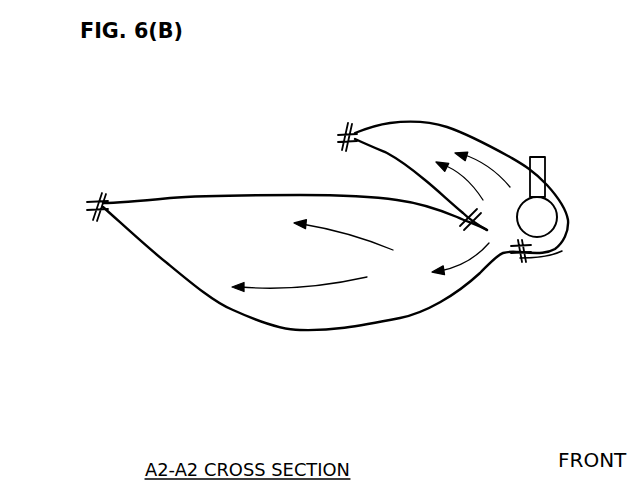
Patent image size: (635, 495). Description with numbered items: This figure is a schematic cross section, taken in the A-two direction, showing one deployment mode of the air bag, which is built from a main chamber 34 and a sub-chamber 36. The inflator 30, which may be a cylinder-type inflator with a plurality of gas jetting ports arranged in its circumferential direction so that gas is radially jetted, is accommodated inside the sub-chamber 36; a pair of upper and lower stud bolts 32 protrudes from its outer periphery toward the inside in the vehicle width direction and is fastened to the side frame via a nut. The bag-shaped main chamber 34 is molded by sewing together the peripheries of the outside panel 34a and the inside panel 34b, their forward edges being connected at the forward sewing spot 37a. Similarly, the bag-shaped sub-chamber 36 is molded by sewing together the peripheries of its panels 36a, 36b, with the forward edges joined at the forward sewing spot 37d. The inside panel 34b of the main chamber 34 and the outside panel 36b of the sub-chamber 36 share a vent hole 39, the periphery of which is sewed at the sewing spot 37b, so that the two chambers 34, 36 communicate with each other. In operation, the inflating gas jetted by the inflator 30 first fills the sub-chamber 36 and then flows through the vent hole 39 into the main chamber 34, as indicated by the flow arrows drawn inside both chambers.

The inflator 30 is at (560, 200).
The stud bolt 32 is at (541, 158).
The main chamber 34 is at (310, 273).
The outside panel 34a is at (183, 280).
The inside panel 34b is at (214, 199).
The sub-chamber 36 is at (461, 157).
The panel of the sub-chamber 36a is at (434, 126).
The outside panel 36b is at (387, 152).
The forward sewing spot 37a is at (97, 198).
The sewing spot 37b is at (522, 254).
The forward sewing spot 37d is at (343, 128).
The vent hole 39 is at (503, 235).